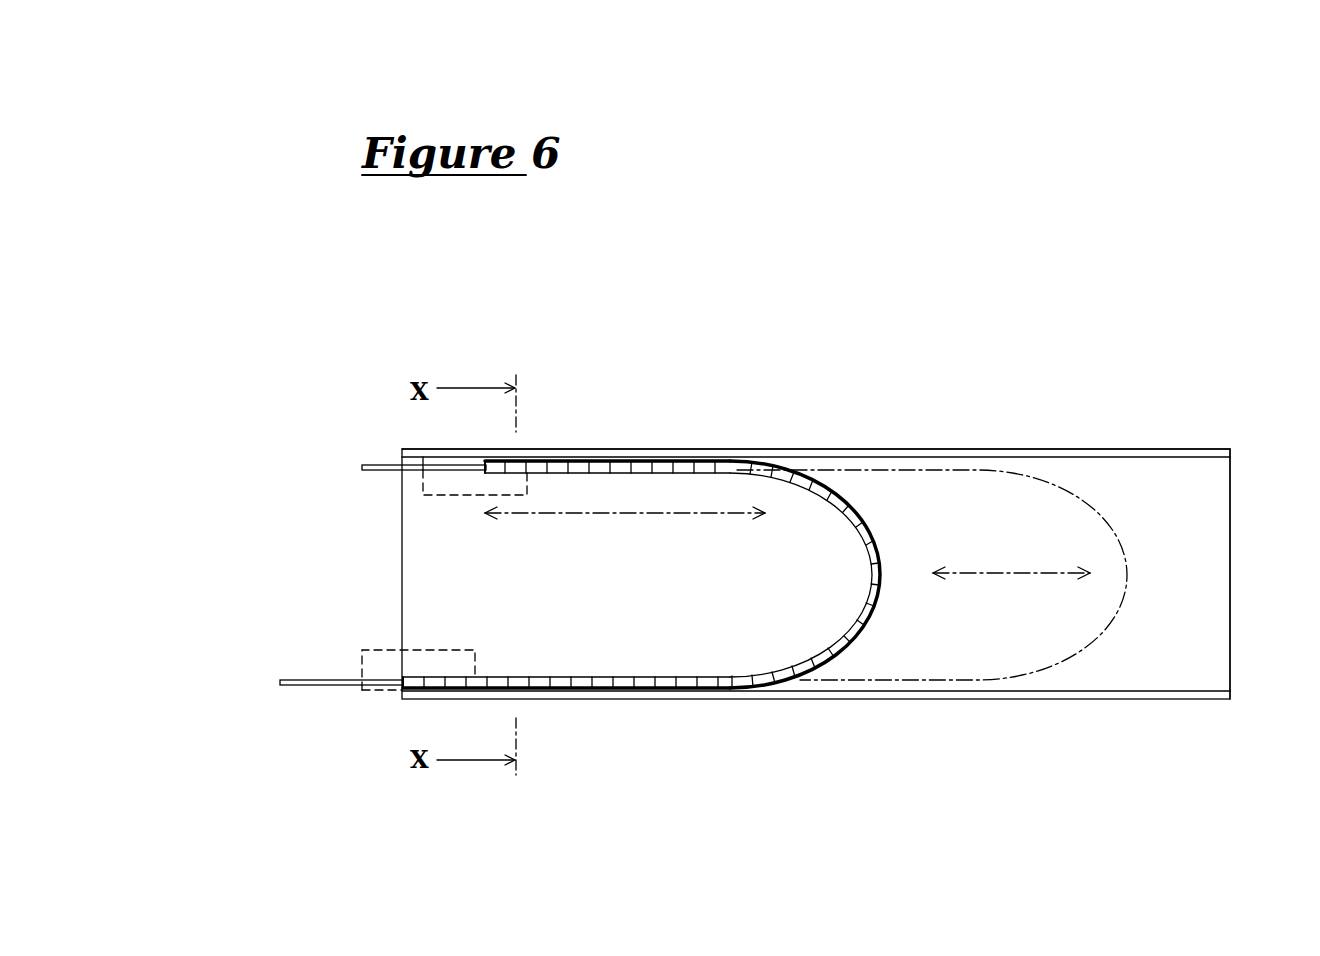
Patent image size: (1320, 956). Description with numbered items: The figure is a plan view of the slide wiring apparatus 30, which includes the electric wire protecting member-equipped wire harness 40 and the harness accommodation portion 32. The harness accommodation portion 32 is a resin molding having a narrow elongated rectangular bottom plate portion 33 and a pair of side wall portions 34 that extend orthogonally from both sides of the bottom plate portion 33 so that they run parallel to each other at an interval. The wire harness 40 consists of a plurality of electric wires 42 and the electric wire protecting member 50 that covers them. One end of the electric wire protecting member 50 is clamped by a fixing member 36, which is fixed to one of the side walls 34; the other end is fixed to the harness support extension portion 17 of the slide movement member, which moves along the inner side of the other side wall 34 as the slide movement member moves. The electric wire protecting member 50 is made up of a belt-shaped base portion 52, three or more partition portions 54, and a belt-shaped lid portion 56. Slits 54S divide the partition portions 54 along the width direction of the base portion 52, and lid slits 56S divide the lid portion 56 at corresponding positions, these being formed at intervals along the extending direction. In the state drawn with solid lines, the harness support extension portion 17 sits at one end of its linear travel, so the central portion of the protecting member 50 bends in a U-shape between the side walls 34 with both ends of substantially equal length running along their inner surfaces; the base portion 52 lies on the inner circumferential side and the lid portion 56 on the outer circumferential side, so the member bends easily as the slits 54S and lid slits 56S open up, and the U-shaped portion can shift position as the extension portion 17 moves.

The harness support extension portion 17 is at (455, 497).
The slide wiring apparatus 30 is at (804, 427).
The harness accommodation portion 32 is at (1101, 447).
The bottom plate portion 33 is at (1215, 592).
The side wall portion 34 is at (1185, 449).
The fixing member 36 is at (365, 650).
The electric wire protecting member-equipped wire harness 40 is at (676, 533).
The electric wires 42 is at (378, 463).
The electric wire protecting member 50 is at (877, 601).
The belt-shaped base portion 52 is at (858, 545).
The partition portions 54 is at (640, 677).
The slits 54S is at (801, 575).
The belt-shaped lid portion 56 is at (839, 574).
The lid slits 56S is at (877, 558).